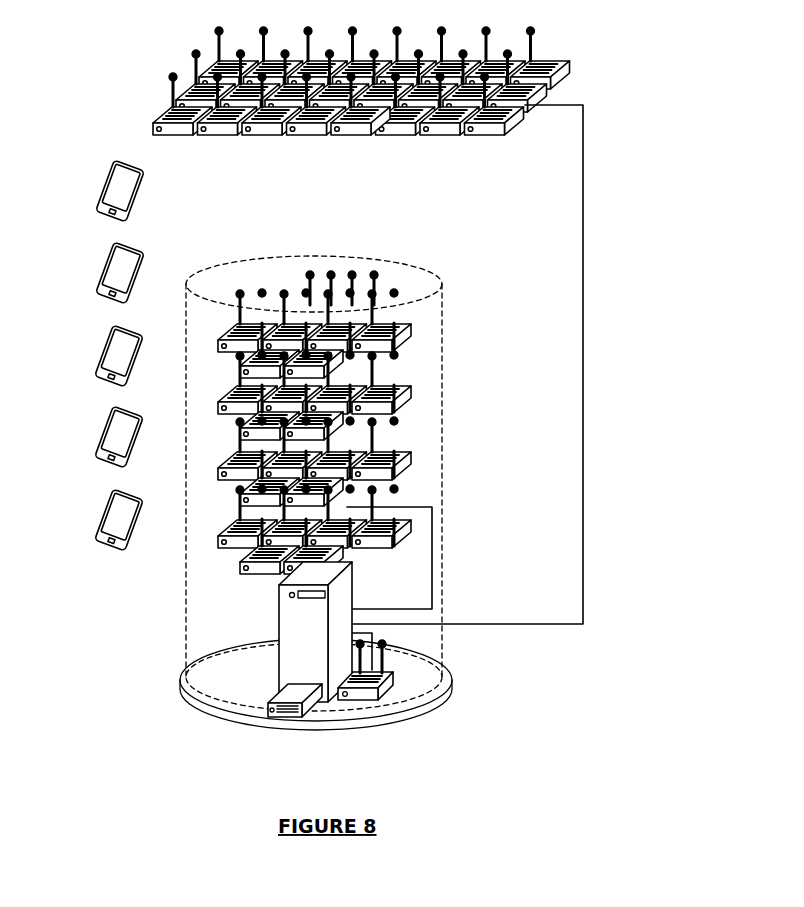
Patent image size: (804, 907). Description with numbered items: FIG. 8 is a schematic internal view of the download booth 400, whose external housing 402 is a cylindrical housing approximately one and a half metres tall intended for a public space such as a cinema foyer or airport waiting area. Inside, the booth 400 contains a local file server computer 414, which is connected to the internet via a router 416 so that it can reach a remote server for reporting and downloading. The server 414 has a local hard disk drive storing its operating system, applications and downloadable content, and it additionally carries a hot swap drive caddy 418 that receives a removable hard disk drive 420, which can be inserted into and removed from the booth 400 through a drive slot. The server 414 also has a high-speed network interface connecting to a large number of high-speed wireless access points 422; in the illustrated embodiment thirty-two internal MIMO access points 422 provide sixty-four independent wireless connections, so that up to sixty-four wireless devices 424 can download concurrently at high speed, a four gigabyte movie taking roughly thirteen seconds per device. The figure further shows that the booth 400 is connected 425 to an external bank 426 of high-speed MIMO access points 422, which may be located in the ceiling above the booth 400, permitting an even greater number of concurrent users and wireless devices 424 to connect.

The download booth 400 is at (426, 250).
The external housing 402 is at (442, 580).
The local file server computer 414 is at (323, 648).
The router 416 is at (378, 688).
The hot swap drive caddy 418 is at (290, 680).
The removable hard disk drive 420 is at (270, 707).
The high-speed wireless access points 422 is at (487, 129).
The wireless devices 424 is at (108, 348).
The connection 425 is at (582, 267).
The external bank 426 is at (339, 139).